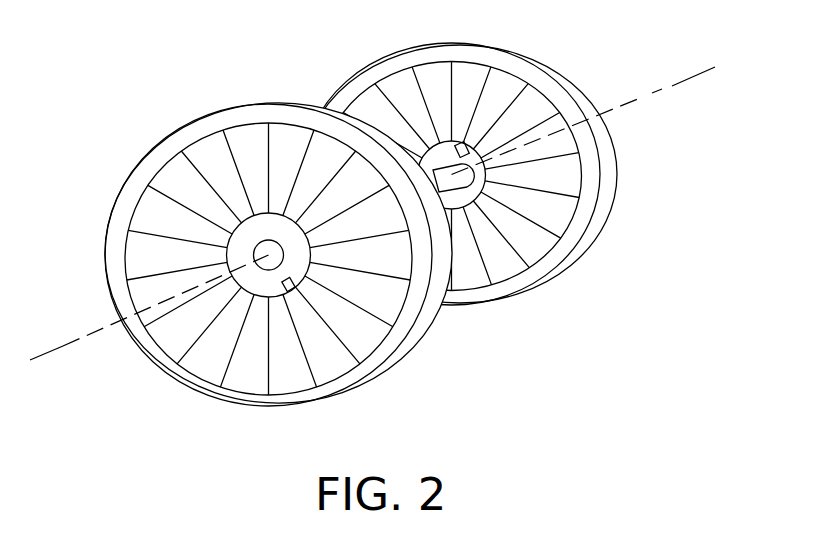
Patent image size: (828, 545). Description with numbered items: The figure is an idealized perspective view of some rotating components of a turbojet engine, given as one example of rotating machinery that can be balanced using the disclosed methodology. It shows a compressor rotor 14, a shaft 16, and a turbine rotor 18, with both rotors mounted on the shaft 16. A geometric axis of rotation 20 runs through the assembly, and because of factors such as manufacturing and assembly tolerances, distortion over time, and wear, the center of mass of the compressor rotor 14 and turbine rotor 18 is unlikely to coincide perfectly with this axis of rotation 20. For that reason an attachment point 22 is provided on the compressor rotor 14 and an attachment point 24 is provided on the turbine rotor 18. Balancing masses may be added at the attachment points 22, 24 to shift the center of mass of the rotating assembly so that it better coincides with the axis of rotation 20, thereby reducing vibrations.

The compressor rotor 14 is at (357, 395).
The shaft 16 is at (527, 261).
The turbine rotor 18 is at (617, 172).
The axis of rotation 20 is at (62, 347).
The attachment point 22 is at (289, 288).
The attachment point 24 is at (465, 145).